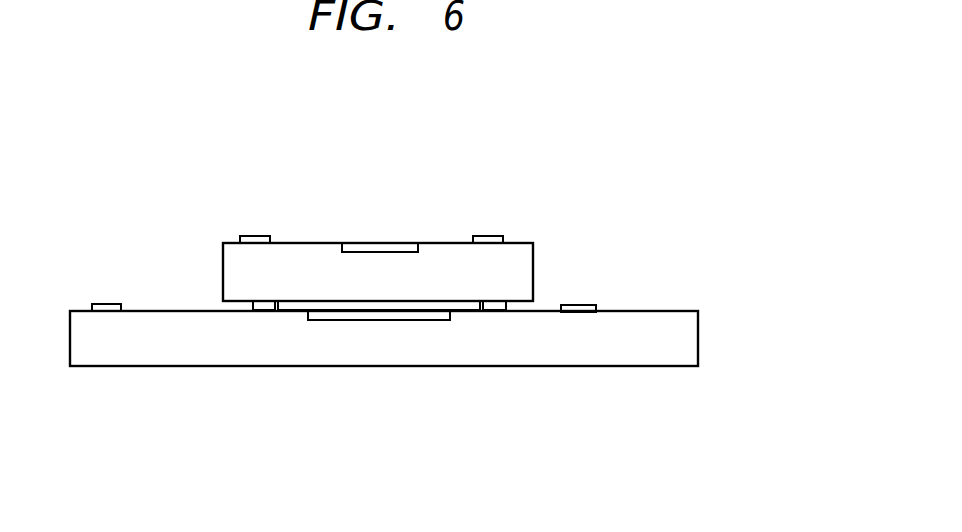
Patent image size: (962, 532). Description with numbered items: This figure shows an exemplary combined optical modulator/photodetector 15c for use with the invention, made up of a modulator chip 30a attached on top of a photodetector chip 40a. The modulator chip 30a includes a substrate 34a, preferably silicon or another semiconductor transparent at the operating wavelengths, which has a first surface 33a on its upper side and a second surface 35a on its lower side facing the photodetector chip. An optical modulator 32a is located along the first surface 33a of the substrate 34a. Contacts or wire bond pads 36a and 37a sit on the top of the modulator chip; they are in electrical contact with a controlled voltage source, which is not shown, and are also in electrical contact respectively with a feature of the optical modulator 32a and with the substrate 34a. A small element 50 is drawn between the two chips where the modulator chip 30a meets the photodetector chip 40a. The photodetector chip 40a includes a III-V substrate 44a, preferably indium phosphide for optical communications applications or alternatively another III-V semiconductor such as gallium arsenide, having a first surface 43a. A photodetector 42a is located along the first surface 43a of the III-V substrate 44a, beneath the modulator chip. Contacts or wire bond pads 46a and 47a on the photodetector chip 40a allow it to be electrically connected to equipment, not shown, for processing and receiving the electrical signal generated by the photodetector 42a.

The combined optical modulator/photodetector 15c is at (602, 137).
The modulator chip 30a is at (198, 243).
The substrate 34a is at (523, 268).
The first surface 33a is at (307, 243).
The optical modulator 32a is at (382, 245).
The contact or wire bond pad 37a is at (251, 236).
The contact or wire bond pad 36a is at (492, 236).
The solder bump 50 is at (257, 312).
The second surface 35a is at (430, 312).
The photodetector chip 40a is at (724, 341).
The III-V substrate 44a is at (594, 352).
The first surface 43a is at (172, 310).
The photodetector 42a is at (336, 321).
The contact or wire bond pad 47a is at (92, 302).
The contact or wire bond pad 46a is at (588, 304).